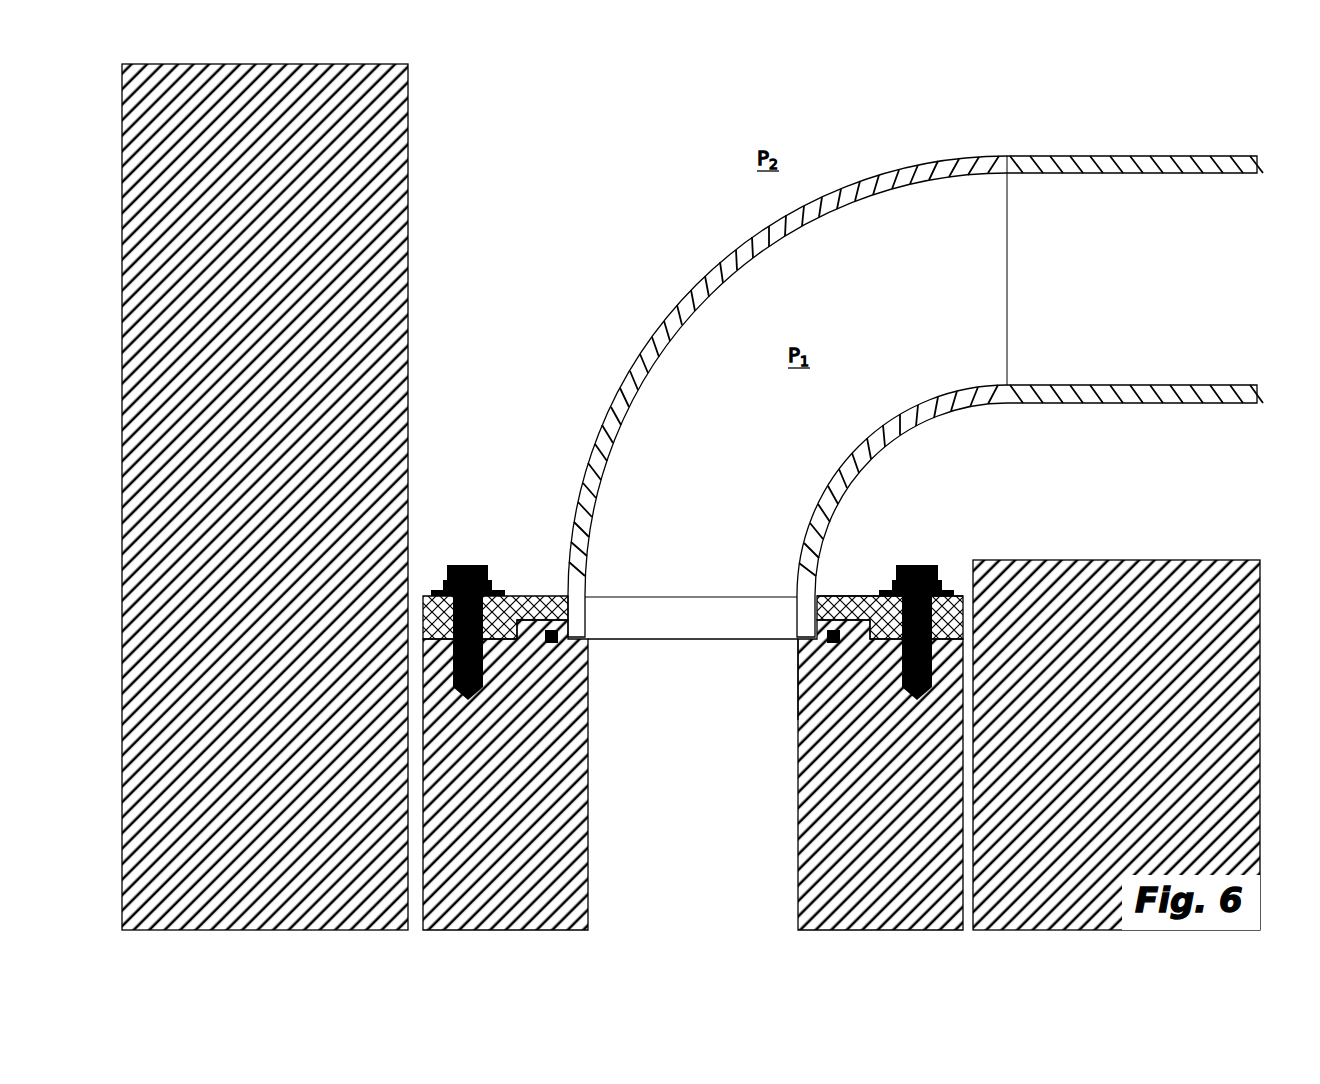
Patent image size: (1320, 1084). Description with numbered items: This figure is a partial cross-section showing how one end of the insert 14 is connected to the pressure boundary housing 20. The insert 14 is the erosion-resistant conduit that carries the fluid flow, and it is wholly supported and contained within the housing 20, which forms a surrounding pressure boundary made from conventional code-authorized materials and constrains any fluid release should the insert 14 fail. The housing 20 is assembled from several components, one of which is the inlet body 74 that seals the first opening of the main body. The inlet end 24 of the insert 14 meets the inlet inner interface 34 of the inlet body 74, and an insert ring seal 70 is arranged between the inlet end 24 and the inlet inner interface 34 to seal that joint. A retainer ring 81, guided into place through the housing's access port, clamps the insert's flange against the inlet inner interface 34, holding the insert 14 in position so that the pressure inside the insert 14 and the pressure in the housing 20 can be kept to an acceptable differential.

The insert 14 is at (690, 290).
The pressure boundary housing 20 is at (264, 489).
The inlet end 24 is at (808, 645).
The inlet inner interface 34 is at (863, 596).
The insert ring seal 70 is at (558, 637).
The inlet body 74 is at (494, 815).
The retainer ring 81 is at (823, 596).